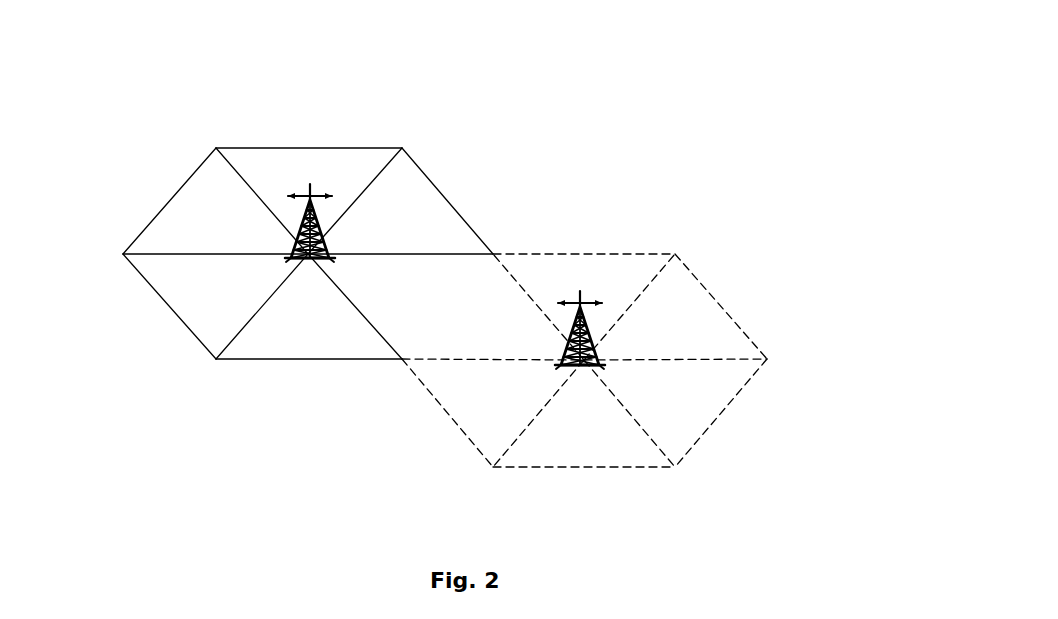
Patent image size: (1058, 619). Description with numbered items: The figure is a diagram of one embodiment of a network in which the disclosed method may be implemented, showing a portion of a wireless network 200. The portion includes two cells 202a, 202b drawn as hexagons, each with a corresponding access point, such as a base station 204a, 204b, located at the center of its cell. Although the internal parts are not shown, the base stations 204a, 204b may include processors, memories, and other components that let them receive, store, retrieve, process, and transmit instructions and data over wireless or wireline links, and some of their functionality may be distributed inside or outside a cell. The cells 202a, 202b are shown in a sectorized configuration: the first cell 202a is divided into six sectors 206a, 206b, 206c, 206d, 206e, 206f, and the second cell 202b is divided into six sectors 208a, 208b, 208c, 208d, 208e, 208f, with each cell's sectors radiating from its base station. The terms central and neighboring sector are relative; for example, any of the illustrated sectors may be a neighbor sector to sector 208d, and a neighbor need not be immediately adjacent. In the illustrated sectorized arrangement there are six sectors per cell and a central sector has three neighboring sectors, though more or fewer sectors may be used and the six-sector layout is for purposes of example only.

The wireless network 200 is at (654, 114).
The cell 202a is at (135, 136).
The cell 202b is at (834, 243).
The access point 204a is at (292, 251).
The access point 204b is at (602, 361).
The sector 206a is at (162, 210).
The sector 206b is at (309, 147).
The sector 206c is at (436, 187).
The sector 206d is at (400, 264).
The sector 206e is at (265, 360).
The sector 206f is at (166, 309).
The sector 208a is at (727, 412).
The sector 208b is at (588, 467).
The sector 208c is at (450, 418).
The sector 208d is at (493, 348).
The sector 208e is at (611, 253).
The sector 208f is at (702, 280).